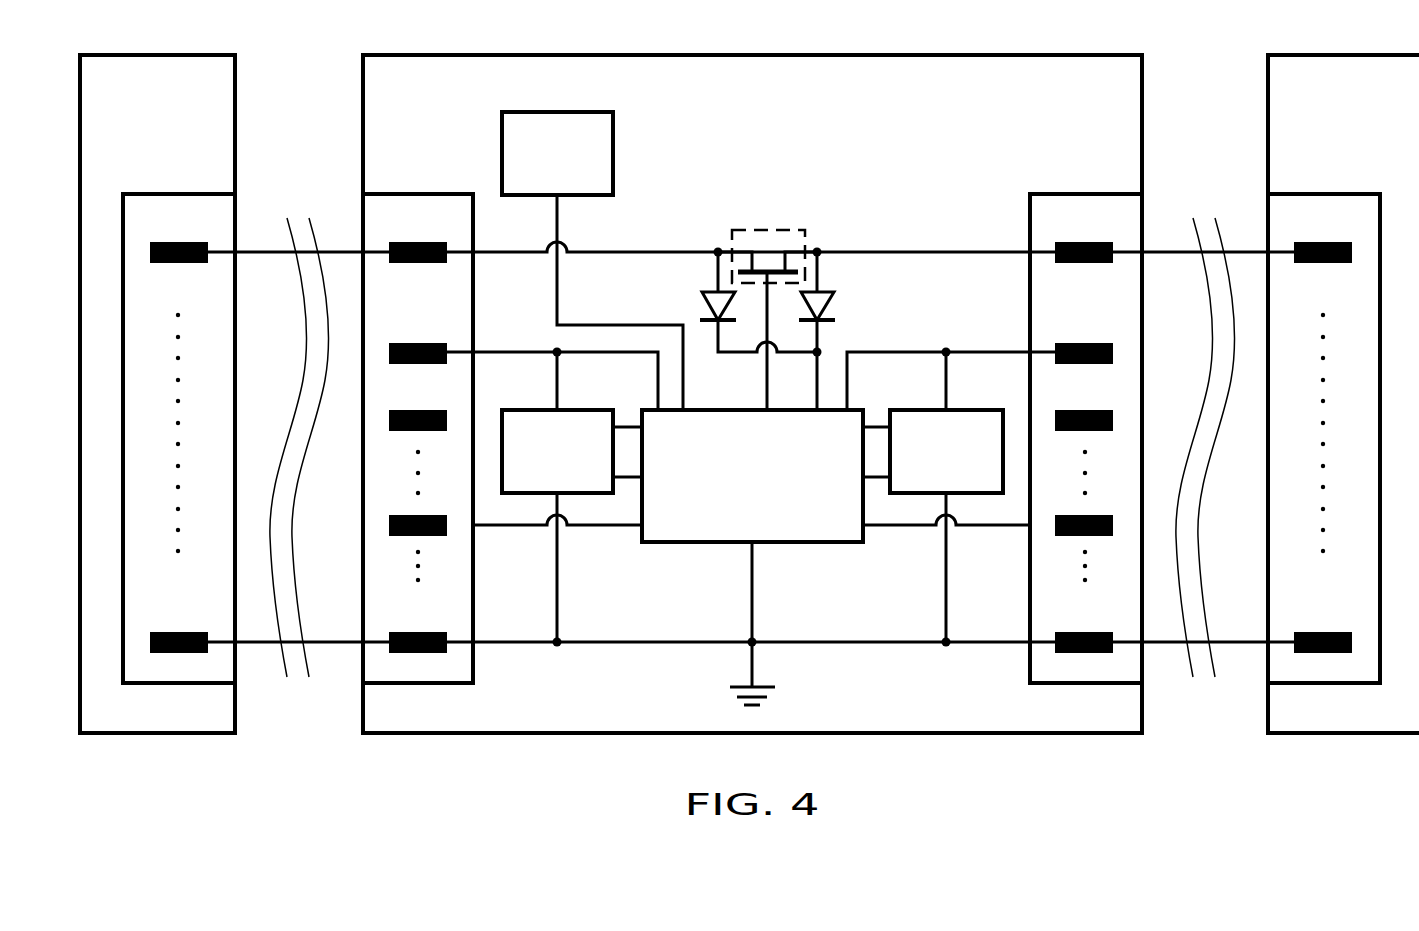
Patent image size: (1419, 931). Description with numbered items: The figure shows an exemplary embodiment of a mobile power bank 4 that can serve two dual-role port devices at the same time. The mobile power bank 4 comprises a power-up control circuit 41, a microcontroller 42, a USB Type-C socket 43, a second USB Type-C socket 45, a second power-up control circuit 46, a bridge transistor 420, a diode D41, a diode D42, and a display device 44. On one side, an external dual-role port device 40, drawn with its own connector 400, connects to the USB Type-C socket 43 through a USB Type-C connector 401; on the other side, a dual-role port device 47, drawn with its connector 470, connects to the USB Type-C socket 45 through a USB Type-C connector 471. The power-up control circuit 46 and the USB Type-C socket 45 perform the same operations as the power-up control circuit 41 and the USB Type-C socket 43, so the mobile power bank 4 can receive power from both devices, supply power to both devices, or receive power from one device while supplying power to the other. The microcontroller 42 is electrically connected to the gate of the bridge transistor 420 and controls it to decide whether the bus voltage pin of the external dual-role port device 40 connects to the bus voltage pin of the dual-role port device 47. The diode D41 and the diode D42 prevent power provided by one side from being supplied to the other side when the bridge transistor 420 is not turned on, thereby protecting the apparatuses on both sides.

The mobile power bank 4 is at (762, 108).
The external dual-role port device 40 is at (1368, 108).
The connector of external device 400 is at (1322, 194).
The USB Type-C connector 401 is at (1270, 176).
The power-up control circuit 41 is at (929, 468).
The microcontroller 42 is at (734, 491).
The bridge transistor 420 is at (767, 228).
The USB Type-C socket 43 is at (1082, 194).
The display device 44 is at (539, 170).
The USB Type-C socket 45 is at (415, 194).
The power-up control circuit 46 is at (539, 468).
The dual-role port device 47 is at (100, 108).
The connector of external device 470 is at (178, 194).
The USB Type-C connector 471 is at (235, 176).
The diode D41 is at (698, 310).
The diode D42 is at (838, 309).